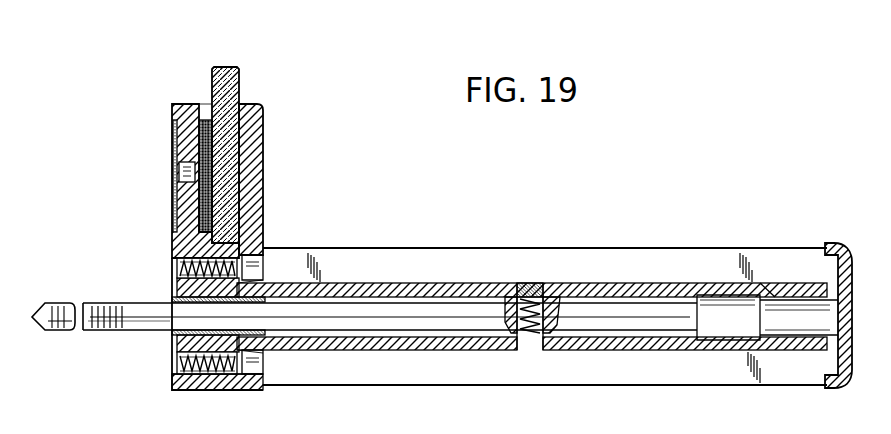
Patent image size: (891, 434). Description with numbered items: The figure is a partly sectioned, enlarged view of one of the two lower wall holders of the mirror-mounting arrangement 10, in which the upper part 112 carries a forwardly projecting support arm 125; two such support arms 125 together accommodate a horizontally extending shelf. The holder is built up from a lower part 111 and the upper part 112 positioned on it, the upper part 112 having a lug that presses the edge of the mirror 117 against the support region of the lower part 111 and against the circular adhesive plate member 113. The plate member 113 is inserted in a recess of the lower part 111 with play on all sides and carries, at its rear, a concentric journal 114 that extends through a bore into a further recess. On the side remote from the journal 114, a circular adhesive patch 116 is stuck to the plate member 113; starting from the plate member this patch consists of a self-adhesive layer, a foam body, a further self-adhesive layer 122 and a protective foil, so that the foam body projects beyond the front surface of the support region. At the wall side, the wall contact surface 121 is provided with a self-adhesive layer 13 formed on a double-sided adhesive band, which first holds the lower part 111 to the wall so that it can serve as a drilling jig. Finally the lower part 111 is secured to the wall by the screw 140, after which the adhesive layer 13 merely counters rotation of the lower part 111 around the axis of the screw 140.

The fastening device 10 is at (205, 104).
The self-adhesive layer 13 is at (172, 135).
The lower part 111 is at (166, 232).
The upper part 112 is at (272, 183).
The adhesive plate member 113 is at (203, 126).
The journal 114 is at (178, 172).
The adhesive patch 116 is at (166, 348).
The mirror 117 is at (225, 69).
The wall contact surface 121 is at (172, 253).
The further self-adhesive layer 122 is at (213, 148).
The support arm 125 is at (574, 396).
The screw 140 is at (115, 304).